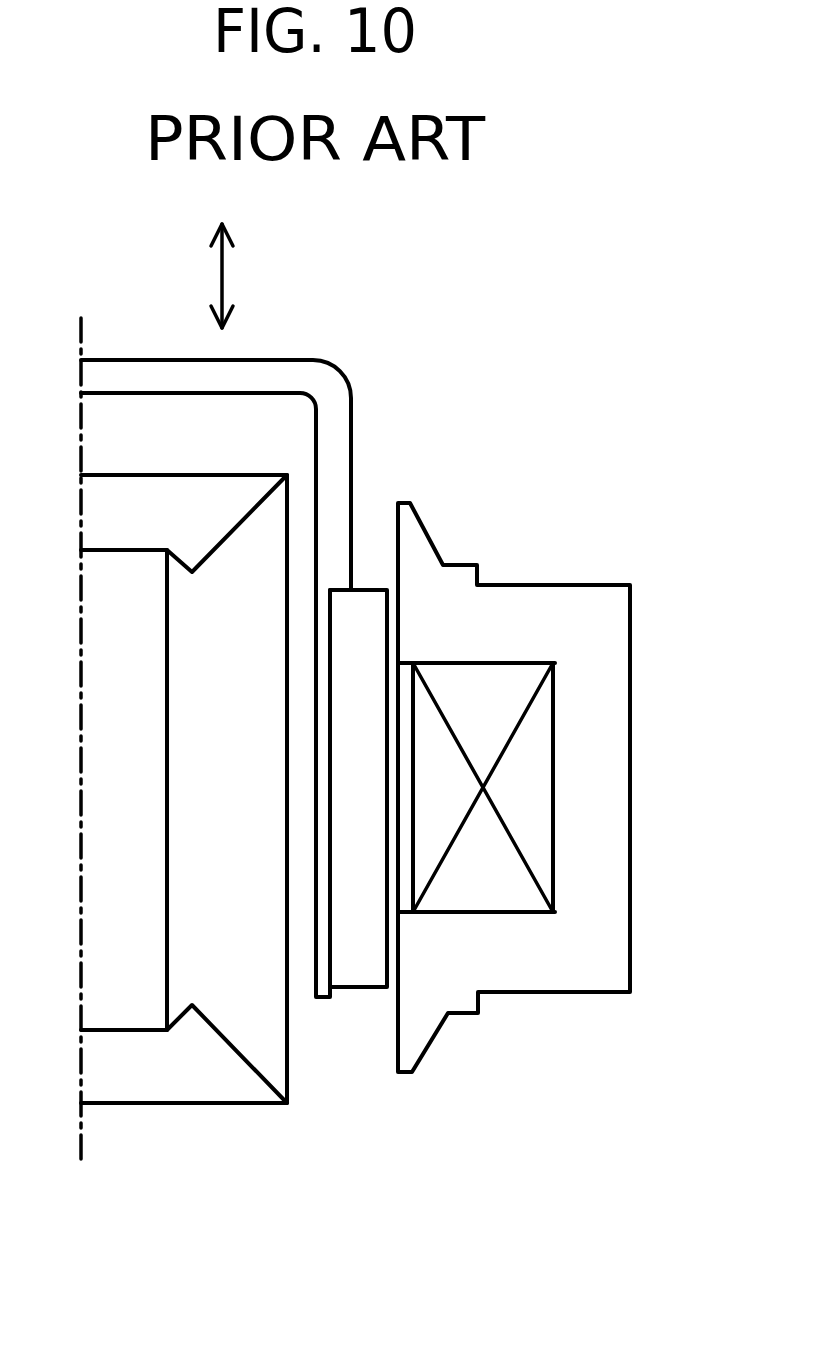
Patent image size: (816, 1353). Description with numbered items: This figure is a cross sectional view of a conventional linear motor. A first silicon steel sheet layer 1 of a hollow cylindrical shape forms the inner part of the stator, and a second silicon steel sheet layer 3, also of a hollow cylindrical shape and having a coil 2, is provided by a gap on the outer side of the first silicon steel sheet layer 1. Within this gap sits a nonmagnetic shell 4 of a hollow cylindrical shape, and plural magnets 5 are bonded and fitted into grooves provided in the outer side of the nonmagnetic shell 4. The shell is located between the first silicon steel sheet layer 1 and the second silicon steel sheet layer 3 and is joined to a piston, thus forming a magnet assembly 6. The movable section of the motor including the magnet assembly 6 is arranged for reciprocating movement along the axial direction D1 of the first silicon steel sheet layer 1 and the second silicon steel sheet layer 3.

The first silicon steel sheet layer 1 is at (257, 1042).
The coil 2 is at (502, 688).
The second silicon steel sheet layer 3 is at (550, 955).
The nonmagnetic shell 4 is at (335, 458).
The magnets 5 is at (362, 620).
The magnet assembly 6 is at (388, 378).
The axial direction D1 is at (227, 280).